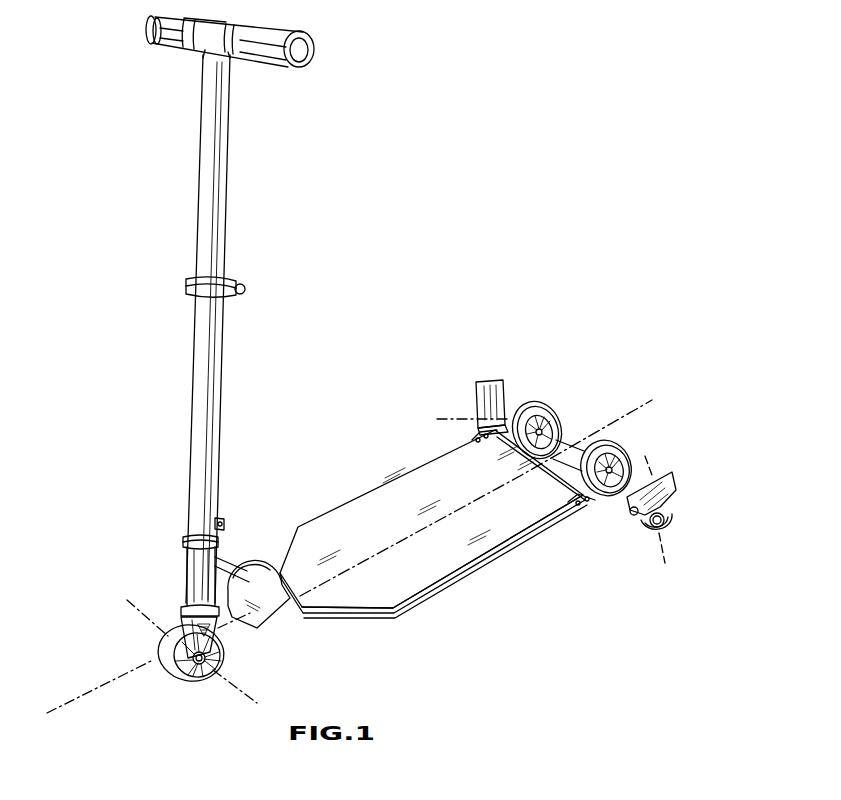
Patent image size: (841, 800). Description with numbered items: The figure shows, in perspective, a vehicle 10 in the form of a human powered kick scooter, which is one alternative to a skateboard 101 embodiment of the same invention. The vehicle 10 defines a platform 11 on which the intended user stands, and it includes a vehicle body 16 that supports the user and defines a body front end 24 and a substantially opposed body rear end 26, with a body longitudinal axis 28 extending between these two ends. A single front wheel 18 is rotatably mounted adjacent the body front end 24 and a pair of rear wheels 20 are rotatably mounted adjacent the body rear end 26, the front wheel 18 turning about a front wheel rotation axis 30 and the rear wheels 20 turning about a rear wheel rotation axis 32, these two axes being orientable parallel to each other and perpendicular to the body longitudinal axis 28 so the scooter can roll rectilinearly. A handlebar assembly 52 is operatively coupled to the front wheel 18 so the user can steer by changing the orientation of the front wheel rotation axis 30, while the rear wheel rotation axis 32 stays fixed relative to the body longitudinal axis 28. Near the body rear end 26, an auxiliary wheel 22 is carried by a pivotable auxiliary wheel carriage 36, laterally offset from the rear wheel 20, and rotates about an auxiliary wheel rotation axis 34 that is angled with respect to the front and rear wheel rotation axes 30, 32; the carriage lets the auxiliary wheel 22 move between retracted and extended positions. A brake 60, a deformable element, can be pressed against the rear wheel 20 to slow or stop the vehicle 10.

The vehicle 10 is at (548, 294).
The platform 11 is at (362, 507).
The vehicle body 16 is at (452, 585).
The front wheel 18 is at (160, 684).
The rear wheel 20 is at (557, 440).
The auxiliary wheel 22 is at (504, 424).
The body front end 24 is at (191, 603).
The body rear end 26 is at (554, 450).
The body longitudinal axis 28 is at (103, 690).
The front wheel rotation axis 30 is at (143, 617).
The rear wheel rotation axis 32 is at (490, 491).
The auxiliary wheel rotation axis 34 is at (437, 419).
The auxiliary wheel carriage 36 is at (488, 382).
The handlebar assembly 52 is at (217, 231).
The brake 60 is at (538, 402).
The skateboard 101 is at (572, 799).